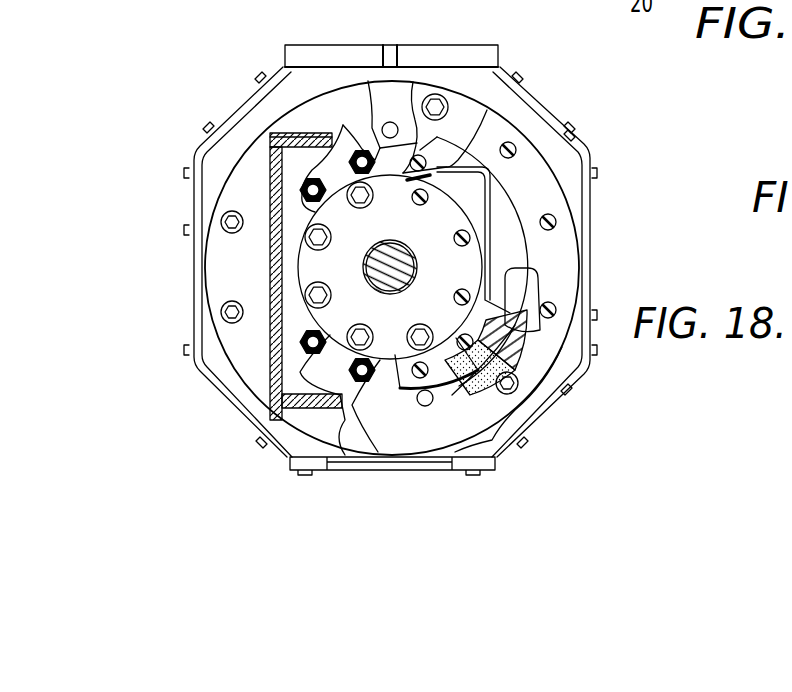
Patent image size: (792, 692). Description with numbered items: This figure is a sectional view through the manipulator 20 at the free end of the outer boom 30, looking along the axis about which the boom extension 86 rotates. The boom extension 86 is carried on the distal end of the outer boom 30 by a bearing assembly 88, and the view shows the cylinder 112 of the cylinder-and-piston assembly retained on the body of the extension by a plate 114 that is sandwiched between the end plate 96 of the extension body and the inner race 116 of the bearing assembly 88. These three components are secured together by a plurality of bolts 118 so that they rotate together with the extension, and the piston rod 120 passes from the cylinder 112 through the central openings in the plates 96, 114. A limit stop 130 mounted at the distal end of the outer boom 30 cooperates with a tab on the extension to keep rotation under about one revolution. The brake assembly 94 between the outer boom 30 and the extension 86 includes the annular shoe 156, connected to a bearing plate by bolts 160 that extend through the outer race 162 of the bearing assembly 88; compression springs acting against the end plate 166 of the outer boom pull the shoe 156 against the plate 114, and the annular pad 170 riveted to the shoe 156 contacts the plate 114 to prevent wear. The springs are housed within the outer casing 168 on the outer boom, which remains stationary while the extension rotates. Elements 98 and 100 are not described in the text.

The manipulator 20 is at (560, 90).
The outer boom 30 is at (466, 165).
The boom extension 86 is at (264, 371).
The bearing assembly 88 is at (467, 92).
The brake assembly 94 is at (520, 404).
The end plate 96 is at (287, 118).
The flange 98 is at (271, 216).
The lower flange 100 is at (322, 405).
The cylinder 112 is at (450, 210).
The plate 114 is at (425, 300).
The inner race 116 is at (507, 303).
The bolts 118 is at (360, 152).
The rod 120 is at (370, 262).
The limit stop 130 is at (393, 58).
The annular shoe 156 is at (405, 93).
The bolts 160 is at (222, 302).
The outer race 162 is at (578, 378).
The end plate 166 is at (575, 158).
The outer casing 168 is at (195, 203).
The annular pad 170 is at (495, 352).